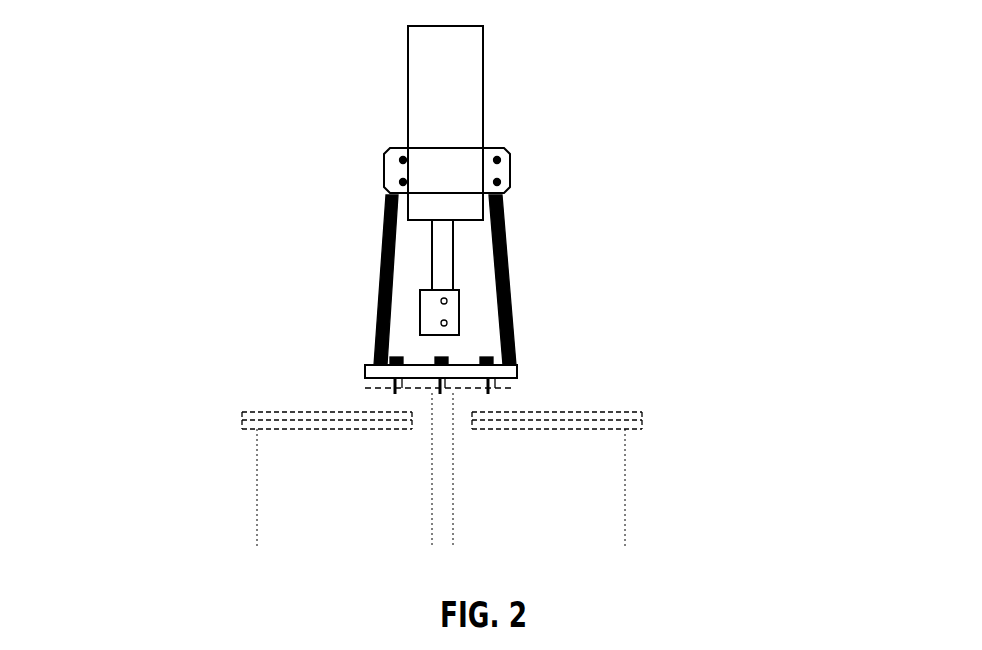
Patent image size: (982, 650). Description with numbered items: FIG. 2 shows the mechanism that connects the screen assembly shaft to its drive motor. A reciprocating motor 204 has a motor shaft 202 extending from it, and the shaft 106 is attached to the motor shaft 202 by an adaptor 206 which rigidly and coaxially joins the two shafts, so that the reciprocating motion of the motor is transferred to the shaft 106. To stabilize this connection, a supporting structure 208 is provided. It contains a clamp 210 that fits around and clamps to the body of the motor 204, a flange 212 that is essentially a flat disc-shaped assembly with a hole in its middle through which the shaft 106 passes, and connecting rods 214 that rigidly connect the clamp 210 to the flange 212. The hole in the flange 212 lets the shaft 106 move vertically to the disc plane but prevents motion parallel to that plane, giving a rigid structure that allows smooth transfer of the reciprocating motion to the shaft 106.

The shaft 106 is at (443, 465).
The motor shaft 202 is at (455, 283).
The reciprocating motor 204 is at (453, 110).
The adaptor 206 is at (442, 322).
The supporting structure 208 is at (362, 216).
The clamp 210 is at (462, 175).
The flange 212 is at (393, 370).
The connecting rods 214 is at (282, 492).